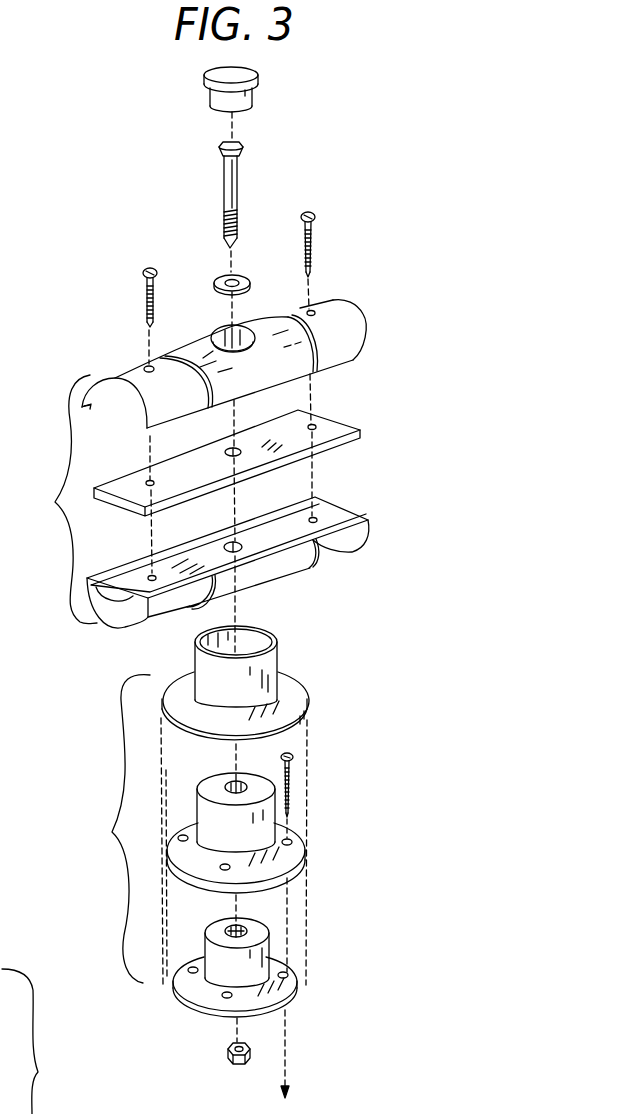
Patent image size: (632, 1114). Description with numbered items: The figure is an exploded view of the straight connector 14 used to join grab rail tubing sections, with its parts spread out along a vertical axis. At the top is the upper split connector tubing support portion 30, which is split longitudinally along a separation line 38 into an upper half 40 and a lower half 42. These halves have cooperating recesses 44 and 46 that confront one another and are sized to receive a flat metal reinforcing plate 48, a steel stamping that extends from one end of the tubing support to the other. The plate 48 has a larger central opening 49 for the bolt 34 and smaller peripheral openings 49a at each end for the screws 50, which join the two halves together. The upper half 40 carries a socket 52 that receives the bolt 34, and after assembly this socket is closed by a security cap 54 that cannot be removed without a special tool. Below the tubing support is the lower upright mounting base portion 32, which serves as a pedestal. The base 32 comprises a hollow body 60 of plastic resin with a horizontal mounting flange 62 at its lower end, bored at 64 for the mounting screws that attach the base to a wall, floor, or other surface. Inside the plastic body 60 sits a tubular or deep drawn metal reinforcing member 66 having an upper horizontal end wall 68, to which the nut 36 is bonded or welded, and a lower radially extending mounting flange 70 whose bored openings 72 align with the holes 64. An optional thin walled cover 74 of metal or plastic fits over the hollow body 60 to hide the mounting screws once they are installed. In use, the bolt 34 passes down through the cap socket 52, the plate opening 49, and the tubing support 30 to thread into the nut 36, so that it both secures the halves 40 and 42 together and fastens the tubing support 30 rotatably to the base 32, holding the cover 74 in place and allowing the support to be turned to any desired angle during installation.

The straight connector 14 is at (89, 329).
The upper split connector tubing support portion 30 is at (58, 499).
The lower upright mounting base portion 32 is at (76, 894).
The bolt 34 is at (239, 172).
The nut 36 is at (227, 1054).
The separation line 38 is at (348, 362).
The upper half 40 is at (350, 322).
The lower half 42 is at (340, 555).
The recess 44 is at (92, 406).
The recess 46 is at (133, 582).
The metal reinforcing plate 48 is at (341, 448).
The central opening 49 is at (226, 452).
The peripheral openings 49a is at (148, 482).
The screws 50 is at (314, 238).
The socket 52 is at (241, 332).
The security cap 54 is at (218, 97).
The hollow body 60 is at (208, 811).
The horizontal mounting flange 62 is at (302, 852).
The bored holes 64 is at (291, 840).
The metal reinforcing member 66 is at (226, 957).
The upper horizontal end wall 68 is at (262, 930).
The lower radially extending mounting flange 70 is at (293, 998).
The bored openings 72 is at (281, 978).
The thin walled cover 74 is at (292, 691).